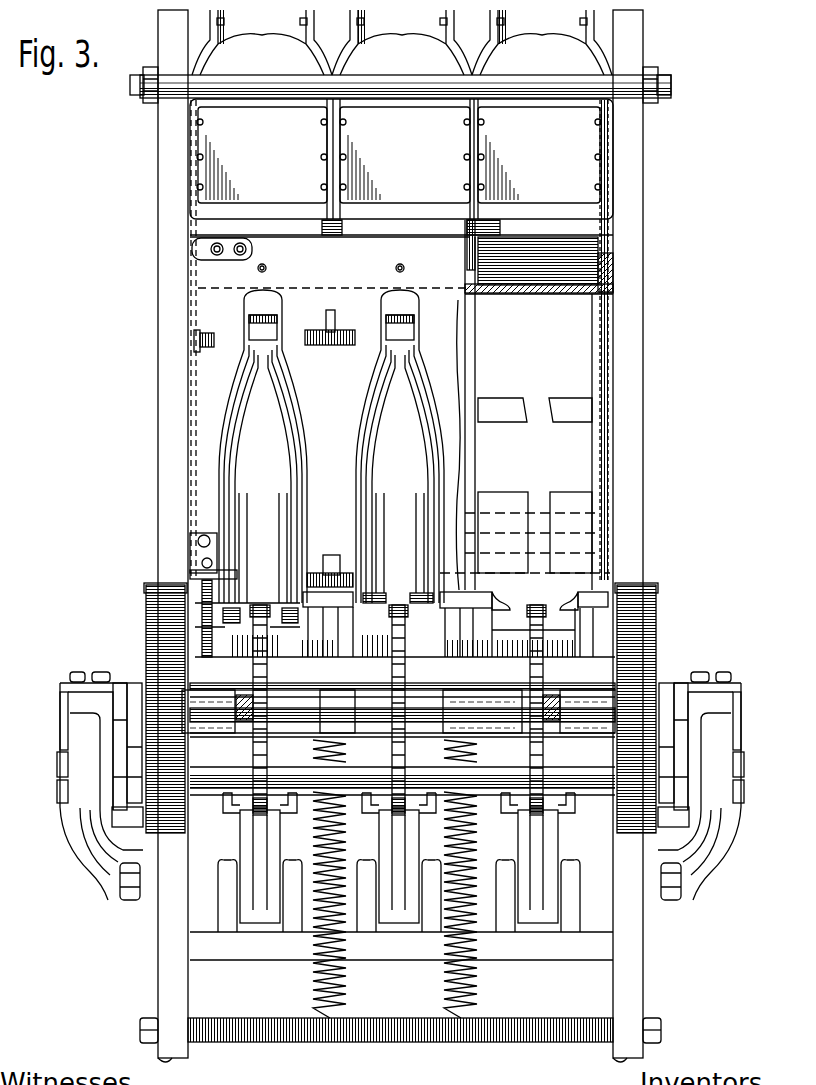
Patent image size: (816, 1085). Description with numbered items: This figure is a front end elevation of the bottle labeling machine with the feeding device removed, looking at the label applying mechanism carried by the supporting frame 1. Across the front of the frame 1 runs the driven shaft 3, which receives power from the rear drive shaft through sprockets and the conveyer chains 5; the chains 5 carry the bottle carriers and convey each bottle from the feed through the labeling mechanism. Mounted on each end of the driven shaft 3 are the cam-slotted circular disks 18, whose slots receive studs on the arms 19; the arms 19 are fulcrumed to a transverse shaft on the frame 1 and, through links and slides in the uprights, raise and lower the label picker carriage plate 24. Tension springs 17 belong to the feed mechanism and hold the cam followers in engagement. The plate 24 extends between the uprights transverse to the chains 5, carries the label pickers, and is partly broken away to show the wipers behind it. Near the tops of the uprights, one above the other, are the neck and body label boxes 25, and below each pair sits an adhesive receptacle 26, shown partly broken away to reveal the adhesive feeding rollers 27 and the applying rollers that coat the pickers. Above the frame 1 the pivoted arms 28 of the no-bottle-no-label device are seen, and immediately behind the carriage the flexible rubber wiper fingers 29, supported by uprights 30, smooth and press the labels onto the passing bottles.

The supporting frame 1 is at (160, 982).
The driven shaft 3 is at (239, 695).
The conveyer chains 5 is at (270, 669).
The tension springs 17 is at (350, 983).
The circular disks 18 is at (150, 647).
The arms 19 is at (127, 817).
The label picker carriage plate 24 is at (330, 262).
The neck label box 25 is at (542, 27).
The adhesive receptacles 26 is at (572, 298).
The adhesive feeding rollers 27 is at (585, 256).
The horizontally extending arms 28 is at (188, 579).
The flexible rubber wiper fingers 29 is at (553, 401).
The uprights 30 is at (592, 450).